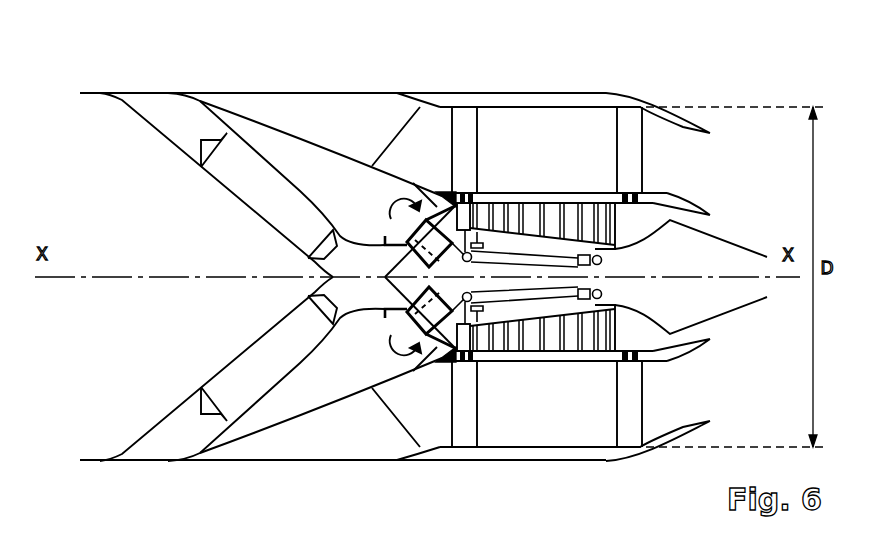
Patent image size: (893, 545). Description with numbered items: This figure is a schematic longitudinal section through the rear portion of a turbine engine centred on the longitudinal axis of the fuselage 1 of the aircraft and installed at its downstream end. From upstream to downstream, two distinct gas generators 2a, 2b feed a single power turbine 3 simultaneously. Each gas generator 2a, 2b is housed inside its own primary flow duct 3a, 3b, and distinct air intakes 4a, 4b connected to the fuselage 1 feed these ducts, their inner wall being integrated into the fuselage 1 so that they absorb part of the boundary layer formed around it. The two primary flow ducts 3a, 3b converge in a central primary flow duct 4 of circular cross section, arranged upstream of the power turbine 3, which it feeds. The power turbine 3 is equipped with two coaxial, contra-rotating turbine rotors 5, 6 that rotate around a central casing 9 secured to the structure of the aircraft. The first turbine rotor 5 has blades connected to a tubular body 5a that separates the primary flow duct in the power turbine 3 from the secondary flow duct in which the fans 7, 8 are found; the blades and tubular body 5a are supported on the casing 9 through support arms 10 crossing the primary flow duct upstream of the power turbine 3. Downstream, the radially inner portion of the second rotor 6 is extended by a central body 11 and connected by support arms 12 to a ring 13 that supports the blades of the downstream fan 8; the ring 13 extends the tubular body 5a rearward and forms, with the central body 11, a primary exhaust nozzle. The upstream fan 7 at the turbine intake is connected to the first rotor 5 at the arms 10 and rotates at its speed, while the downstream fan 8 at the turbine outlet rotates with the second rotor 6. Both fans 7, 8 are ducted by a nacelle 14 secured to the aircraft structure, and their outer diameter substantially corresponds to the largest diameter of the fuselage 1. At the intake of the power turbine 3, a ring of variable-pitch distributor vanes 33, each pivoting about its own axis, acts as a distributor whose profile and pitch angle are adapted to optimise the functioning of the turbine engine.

The fuselage 1 is at (91, 93).
The gas generator 2a is at (260, 173).
The gas generator 2b is at (260, 378).
The power turbine 3 is at (574, 410).
The primary flow duct 3a is at (192, 137).
The primary flow duct 3b is at (193, 415).
The central primary flow duct 4 is at (365, 163).
The air intake 4a is at (141, 100).
The air intake 4b is at (140, 461).
The first turbine rotor 5 is at (498, 207).
The tubular body 5a is at (537, 203).
The second turbine rotor 6 is at (580, 192).
The upstream fan 7 is at (460, 128).
The downstream fan 8 is at (630, 133).
The central casing 9 is at (604, 273).
The support arms 10 is at (413, 183).
The central body 11 is at (727, 235).
The support arms 12 is at (648, 222).
The ring 13 is at (656, 190).
The nacelle 14 is at (573, 107).
The variable-pitch stator vanes 33 is at (406, 251).